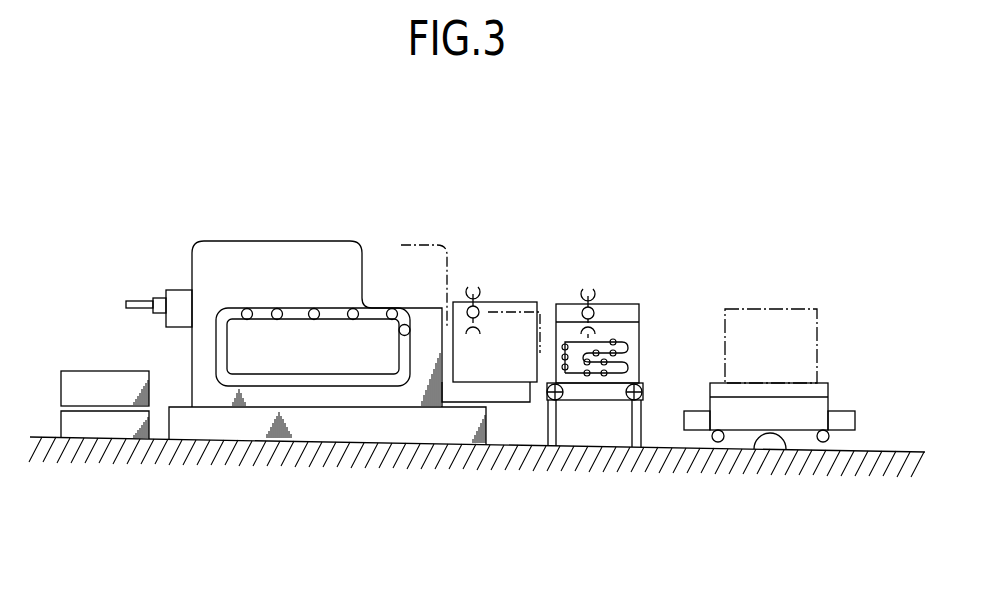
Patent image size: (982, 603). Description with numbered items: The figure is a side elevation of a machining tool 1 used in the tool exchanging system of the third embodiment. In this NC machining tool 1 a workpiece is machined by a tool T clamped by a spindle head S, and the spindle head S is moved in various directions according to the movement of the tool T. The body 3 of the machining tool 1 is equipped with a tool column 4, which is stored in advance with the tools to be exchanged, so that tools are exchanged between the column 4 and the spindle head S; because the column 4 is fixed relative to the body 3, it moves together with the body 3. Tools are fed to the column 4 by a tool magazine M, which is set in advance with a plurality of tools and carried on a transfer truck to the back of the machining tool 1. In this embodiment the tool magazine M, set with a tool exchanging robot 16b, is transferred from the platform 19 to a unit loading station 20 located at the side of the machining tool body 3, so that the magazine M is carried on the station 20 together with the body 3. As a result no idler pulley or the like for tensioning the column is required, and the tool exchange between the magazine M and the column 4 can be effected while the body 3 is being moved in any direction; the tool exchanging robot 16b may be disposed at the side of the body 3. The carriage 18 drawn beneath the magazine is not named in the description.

The machining tool 1 is at (236, 222).
The body 3 is at (343, 252).
The tool column 4 is at (261, 306).
The spindle head S is at (175, 290).
The tool T is at (137, 302).
The tool magazine M is at (500, 300).
The tool exchanging robot 16b is at (587, 287).
The carriage / cart 18 is at (737, 408).
The platform 19 is at (592, 392).
The unit loading station 20 is at (502, 389).